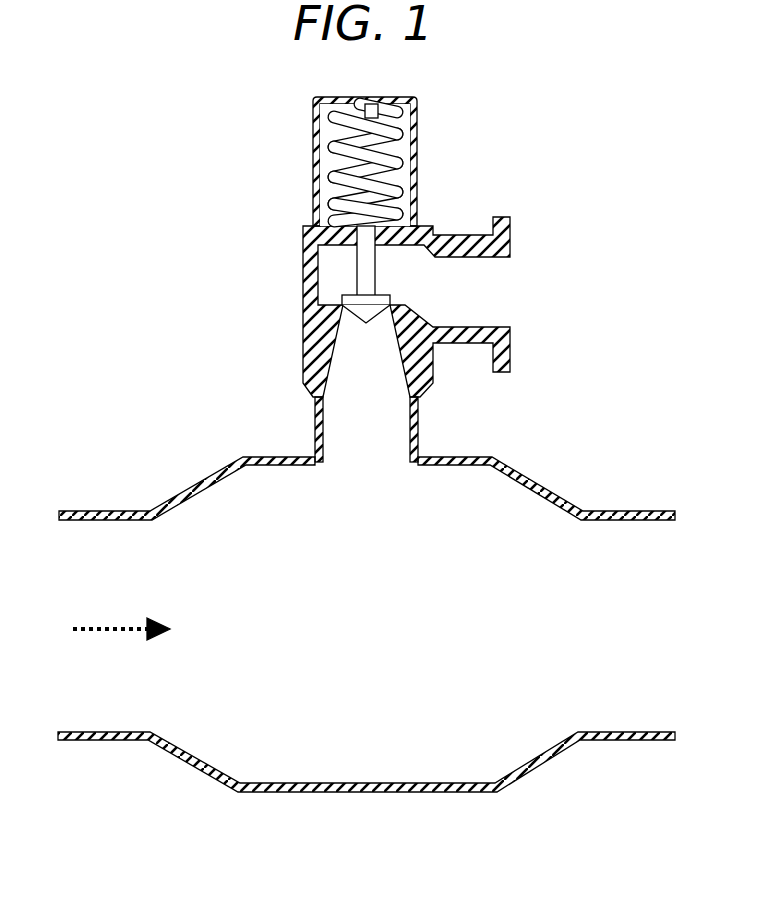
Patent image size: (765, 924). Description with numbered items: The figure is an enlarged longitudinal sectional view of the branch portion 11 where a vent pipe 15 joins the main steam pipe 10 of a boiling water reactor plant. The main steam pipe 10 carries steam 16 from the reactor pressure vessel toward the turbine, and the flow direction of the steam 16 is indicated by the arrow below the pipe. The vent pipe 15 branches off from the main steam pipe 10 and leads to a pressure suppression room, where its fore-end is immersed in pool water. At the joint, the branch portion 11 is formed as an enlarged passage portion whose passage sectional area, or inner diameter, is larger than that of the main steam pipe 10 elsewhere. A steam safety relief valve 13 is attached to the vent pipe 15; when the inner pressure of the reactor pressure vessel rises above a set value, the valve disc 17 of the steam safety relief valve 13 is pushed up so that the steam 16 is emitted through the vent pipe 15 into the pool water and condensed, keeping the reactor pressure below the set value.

The main steam pipe 10 is at (625, 511).
The branch portion 11 is at (568, 833).
The steam safety relief valve 13 is at (313, 163).
The vent pipe 15 is at (410, 432).
The steam 16 is at (107, 625).
The valve disc 17 is at (343, 297).